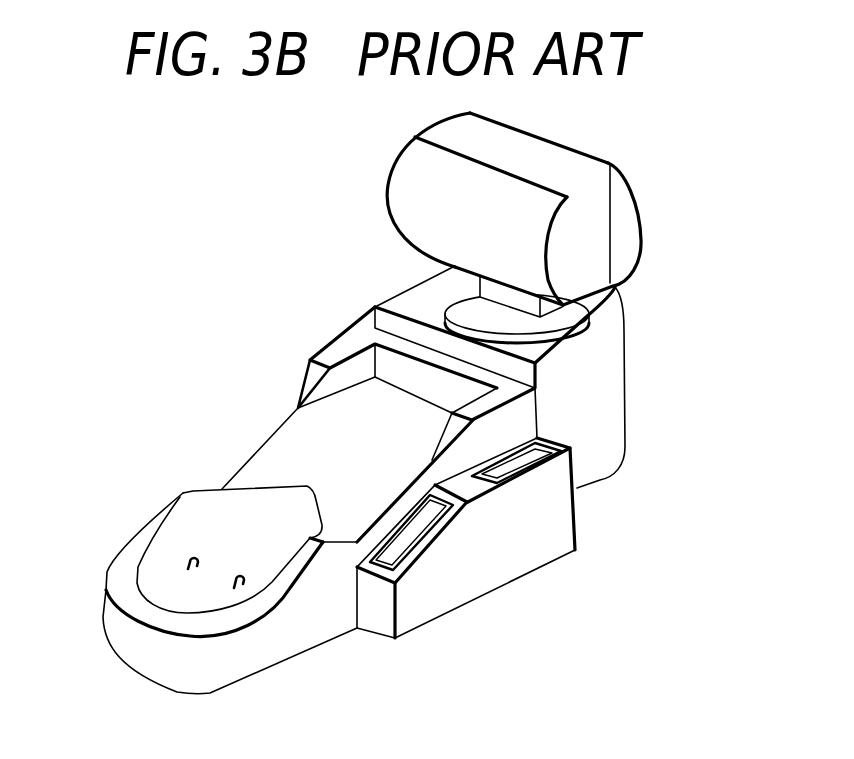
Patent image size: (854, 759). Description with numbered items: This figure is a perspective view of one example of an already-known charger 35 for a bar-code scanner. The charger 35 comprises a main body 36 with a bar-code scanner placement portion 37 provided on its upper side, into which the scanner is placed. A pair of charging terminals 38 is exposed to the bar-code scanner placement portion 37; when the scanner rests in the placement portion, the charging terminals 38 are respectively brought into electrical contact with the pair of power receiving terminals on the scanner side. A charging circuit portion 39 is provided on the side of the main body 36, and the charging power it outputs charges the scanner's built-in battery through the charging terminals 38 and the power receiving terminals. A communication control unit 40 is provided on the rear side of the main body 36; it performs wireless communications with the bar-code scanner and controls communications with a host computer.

The charger 35 is at (313, 346).
The main body 36 is at (325, 620).
The bar-code scanner placement portion 37 is at (273, 460).
The charging terminals 38 is at (188, 555).
The charging circuit portion 39 is at (493, 575).
The communication control unit 40 is at (607, 415).